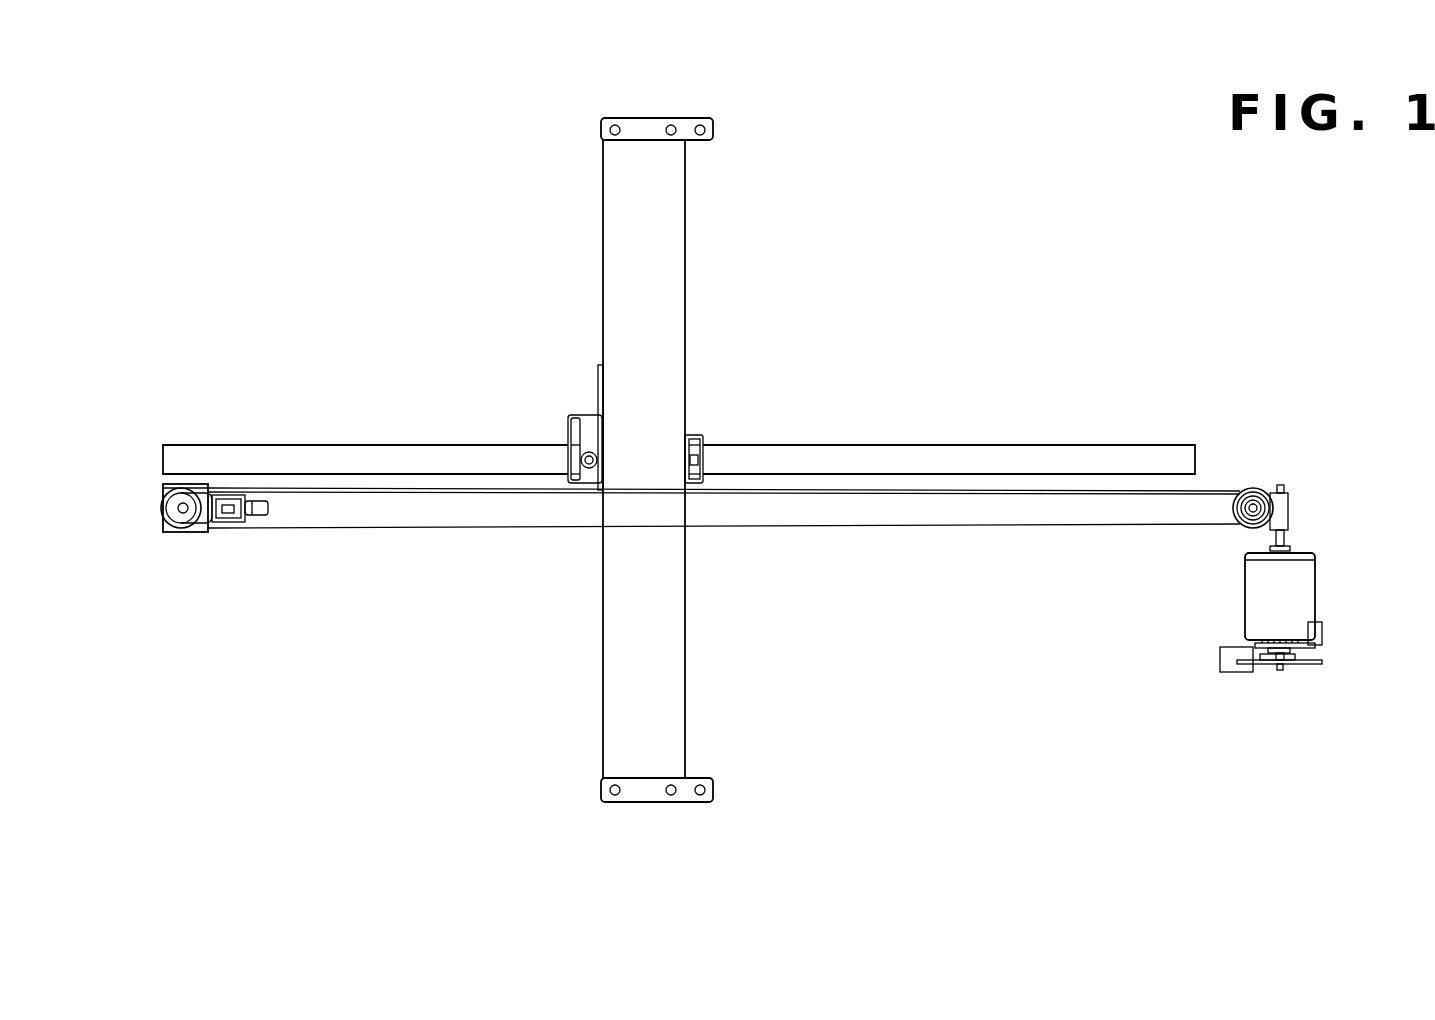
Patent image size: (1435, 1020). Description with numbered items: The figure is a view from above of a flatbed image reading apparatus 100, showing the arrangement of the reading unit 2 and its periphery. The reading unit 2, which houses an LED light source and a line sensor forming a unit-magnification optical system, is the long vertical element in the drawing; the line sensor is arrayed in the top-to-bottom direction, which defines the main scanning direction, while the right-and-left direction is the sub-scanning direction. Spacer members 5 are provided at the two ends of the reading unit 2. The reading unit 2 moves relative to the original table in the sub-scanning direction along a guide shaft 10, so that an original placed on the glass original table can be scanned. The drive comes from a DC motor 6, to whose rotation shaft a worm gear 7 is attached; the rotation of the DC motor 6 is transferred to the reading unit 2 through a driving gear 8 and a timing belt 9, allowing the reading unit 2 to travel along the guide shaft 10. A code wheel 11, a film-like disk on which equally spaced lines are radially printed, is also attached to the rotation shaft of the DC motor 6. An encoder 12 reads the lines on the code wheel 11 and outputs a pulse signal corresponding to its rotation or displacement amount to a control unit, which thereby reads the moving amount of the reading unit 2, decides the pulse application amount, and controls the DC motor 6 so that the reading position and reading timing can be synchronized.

The image reading apparatus 100 is at (318, 185).
The reading unit 2 is at (681, 270).
The spacer members 5 is at (651, 118).
The DC motor 6 is at (1246, 596).
The worm gear 7 is at (1289, 510).
The driving gear 8 is at (1254, 490).
The timing belt 9 is at (1058, 526).
The guide shaft 10 is at (1062, 447).
The code wheel 11 is at (1315, 665).
The encoder 12 is at (1220, 660).